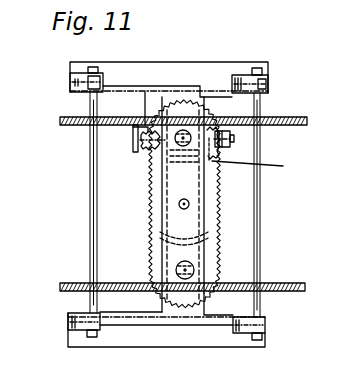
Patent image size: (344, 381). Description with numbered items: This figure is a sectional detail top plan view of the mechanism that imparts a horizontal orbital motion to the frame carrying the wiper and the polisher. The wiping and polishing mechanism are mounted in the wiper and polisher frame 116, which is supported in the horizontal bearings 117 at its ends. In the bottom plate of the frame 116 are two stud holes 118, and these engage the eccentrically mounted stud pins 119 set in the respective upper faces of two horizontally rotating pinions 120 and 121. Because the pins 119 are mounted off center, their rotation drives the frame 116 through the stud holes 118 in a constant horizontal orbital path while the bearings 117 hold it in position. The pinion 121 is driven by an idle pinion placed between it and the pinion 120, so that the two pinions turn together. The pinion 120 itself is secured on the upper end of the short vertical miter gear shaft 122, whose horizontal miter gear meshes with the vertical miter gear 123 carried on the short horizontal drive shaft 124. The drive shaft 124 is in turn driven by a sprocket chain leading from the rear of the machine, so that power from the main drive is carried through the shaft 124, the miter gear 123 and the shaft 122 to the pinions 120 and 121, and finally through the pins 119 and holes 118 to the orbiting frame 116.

The wiper and polisher frame 116 is at (290, 118).
The horizontal bearings 117 is at (72, 80).
The stud holes 118 is at (181, 143).
The stud pins 119 is at (189, 101).
The pinion 120 is at (157, 150).
The pinion 121 is at (119, 267).
The vertical miter gear shaft 122 is at (210, 169).
The vertical miter gear 123 is at (262, 167).
The horizontal drive shaft 124 is at (234, 138).